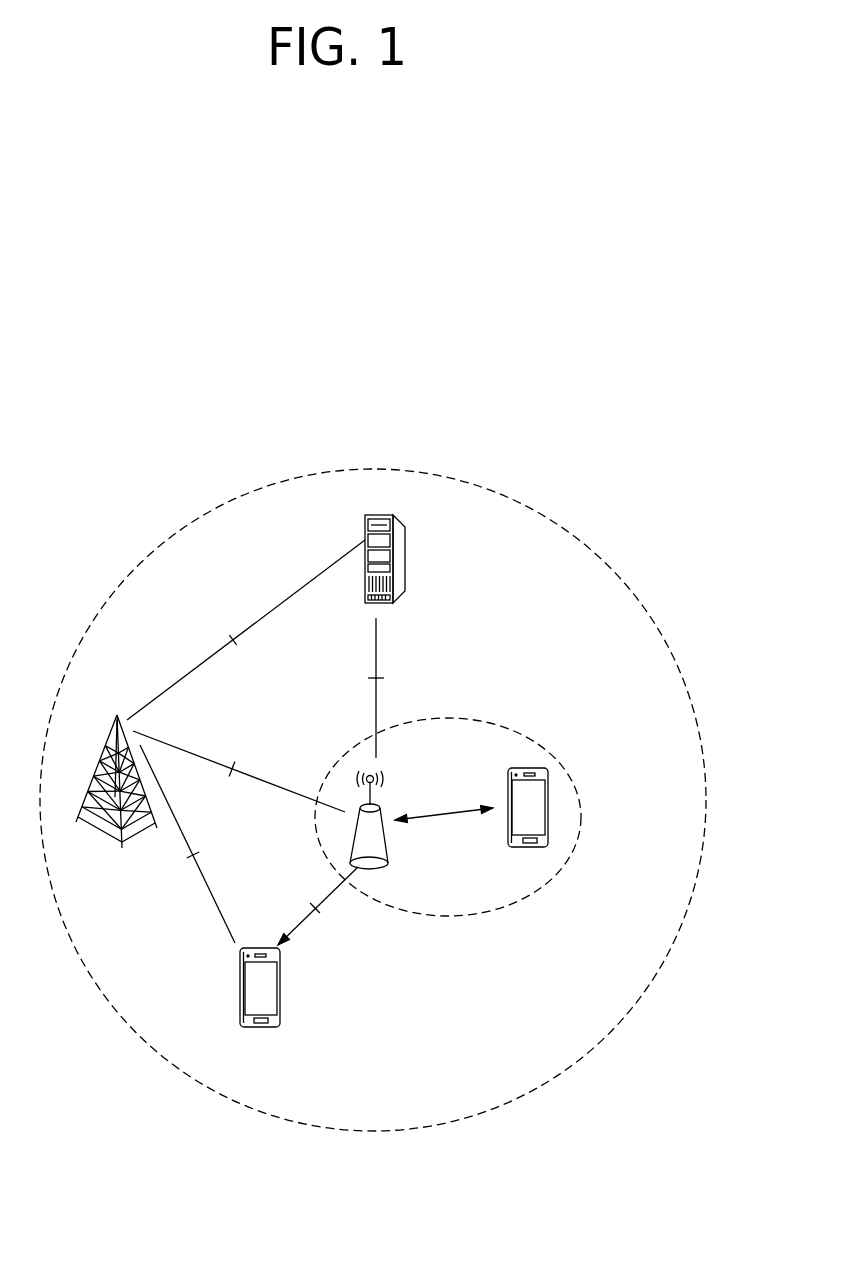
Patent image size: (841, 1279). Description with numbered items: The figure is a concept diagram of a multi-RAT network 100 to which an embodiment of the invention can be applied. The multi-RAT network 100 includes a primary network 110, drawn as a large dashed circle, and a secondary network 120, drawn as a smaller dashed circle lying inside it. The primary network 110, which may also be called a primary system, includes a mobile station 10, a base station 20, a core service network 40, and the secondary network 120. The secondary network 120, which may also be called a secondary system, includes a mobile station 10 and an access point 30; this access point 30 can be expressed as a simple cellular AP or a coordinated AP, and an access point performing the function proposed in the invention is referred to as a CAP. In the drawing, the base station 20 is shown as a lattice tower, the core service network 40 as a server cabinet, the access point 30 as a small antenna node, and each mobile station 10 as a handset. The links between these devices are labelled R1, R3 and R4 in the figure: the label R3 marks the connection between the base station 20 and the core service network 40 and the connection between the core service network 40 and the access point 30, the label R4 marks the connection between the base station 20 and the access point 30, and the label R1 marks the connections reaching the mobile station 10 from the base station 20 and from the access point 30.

The mobile station 10 is at (548, 815).
The base station 20 is at (112, 740).
The access point 30 is at (387, 845).
The core service network 40 is at (405, 560).
The multi-RAT network 100 is at (558, 460).
The primary network 110 is at (142, 562).
The secondary network 120 is at (488, 723).
The first radio link R1 is at (248, 845).
The third radio link R3 is at (270, 649).
The fourth radio link R4 is at (239, 771).